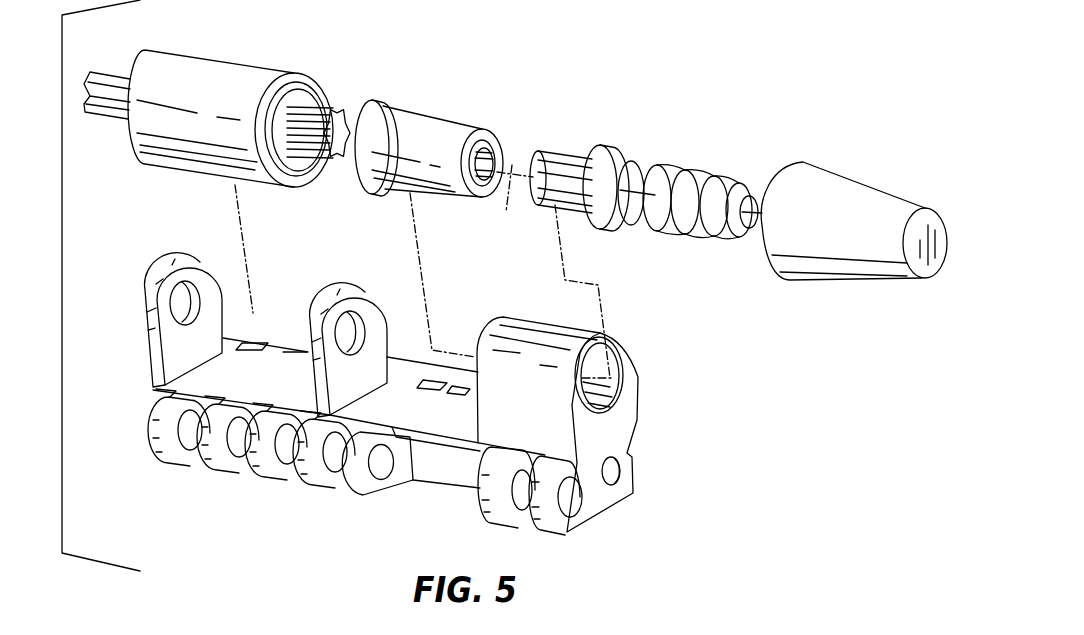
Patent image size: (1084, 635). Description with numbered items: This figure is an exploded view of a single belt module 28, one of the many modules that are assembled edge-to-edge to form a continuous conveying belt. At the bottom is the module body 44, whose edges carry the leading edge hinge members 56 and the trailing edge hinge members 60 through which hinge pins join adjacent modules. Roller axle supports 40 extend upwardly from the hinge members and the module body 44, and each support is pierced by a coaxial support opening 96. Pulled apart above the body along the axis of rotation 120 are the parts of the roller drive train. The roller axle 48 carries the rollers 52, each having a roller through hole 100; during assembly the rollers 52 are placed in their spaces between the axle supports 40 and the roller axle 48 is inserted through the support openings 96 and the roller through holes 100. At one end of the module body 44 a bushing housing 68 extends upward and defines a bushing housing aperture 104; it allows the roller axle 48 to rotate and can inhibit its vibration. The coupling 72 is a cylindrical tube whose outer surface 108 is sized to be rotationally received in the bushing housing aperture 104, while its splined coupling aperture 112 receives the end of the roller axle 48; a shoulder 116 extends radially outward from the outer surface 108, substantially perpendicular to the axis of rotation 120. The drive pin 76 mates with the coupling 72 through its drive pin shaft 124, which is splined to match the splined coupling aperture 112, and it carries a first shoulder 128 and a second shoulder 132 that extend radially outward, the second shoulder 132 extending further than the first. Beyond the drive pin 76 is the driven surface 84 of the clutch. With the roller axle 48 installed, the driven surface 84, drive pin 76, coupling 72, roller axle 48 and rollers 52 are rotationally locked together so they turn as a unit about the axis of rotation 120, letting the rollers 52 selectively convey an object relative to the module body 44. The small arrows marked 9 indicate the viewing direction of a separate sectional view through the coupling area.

The direction arrow 9 is at (330, 108).
The belt module 28 is at (62, 192).
The roller axle supports 40 is at (172, 260).
The module body 44 is at (460, 418).
The roller axle 48 is at (113, 113).
The rollers 52 is at (212, 82).
The leading edge hinge members 56 is at (282, 350).
The trailing edge hinge members 60 is at (308, 478).
The bushing housing 68 is at (495, 348).
The coupling 72 is at (444, 112).
The drive pin 76 is at (652, 154).
The driven surface 84 is at (840, 192).
The coaxial support openings 96 is at (192, 295).
The roller through holes 100 is at (332, 106).
The bushing housing aperture 104 is at (602, 397).
The outer surface 108 is at (447, 128).
The splined coupling aperture 112 is at (493, 157).
The shoulder 116 is at (383, 107).
The axis of rotation 120 is at (517, 201).
The drive pin shaft 124 is at (562, 170).
The first shoulder 128 is at (640, 172).
The second shoulder 132 is at (603, 147).